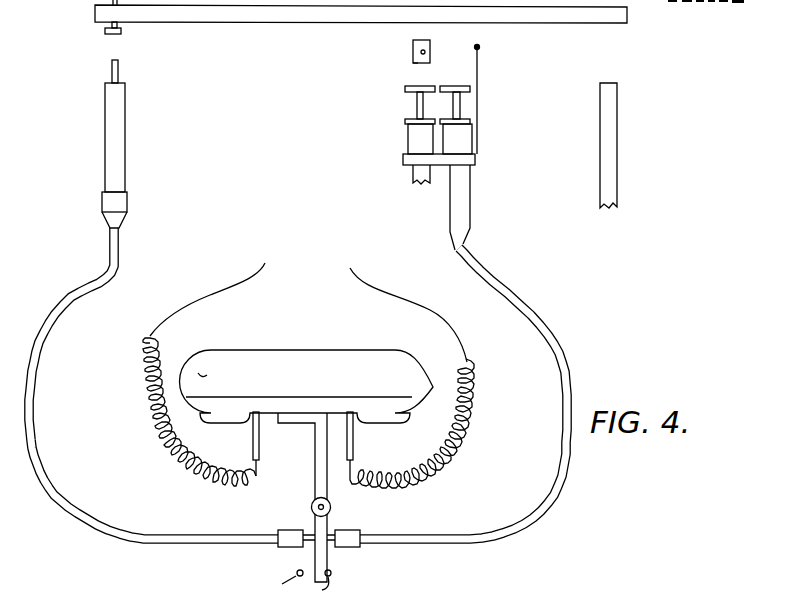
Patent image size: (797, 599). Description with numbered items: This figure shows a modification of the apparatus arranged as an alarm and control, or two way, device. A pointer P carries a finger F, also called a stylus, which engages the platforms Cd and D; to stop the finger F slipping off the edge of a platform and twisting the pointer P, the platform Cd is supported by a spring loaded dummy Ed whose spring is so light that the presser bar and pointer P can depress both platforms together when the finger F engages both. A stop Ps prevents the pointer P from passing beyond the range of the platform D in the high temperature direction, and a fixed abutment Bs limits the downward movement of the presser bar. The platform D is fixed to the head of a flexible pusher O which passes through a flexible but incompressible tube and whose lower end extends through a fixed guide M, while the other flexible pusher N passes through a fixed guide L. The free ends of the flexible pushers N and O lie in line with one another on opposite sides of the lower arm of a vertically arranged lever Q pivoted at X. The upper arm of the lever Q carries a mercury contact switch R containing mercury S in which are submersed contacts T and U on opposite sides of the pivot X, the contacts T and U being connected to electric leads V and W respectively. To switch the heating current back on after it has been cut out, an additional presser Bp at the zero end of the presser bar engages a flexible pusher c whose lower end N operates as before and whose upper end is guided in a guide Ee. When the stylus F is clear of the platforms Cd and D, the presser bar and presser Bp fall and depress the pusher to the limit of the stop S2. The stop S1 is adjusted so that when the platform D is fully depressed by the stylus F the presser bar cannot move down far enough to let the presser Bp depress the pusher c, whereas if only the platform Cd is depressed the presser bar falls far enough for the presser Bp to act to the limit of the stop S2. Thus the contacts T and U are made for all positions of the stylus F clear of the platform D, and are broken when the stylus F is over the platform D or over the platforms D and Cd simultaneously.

The additional presser Bp is at (105, 31).
The flexible pusher c is at (119, 68).
The guide Ee is at (124, 161).
The pointer P is at (413, 50).
The finger F is at (413, 63).
The platform D is at (449, 86).
The stop Ps is at (480, 86).
The platform Cd is at (408, 135).
The gauge cylinder G is at (465, 141).
The spring loaded dummy Ed is at (413, 173).
The fixed abutment Bs is at (613, 167).
The electric lead V is at (204, 374).
The electric lead W is at (412, 378).
The mercury S is at (290, 397).
The mercury contact switch R is at (318, 363).
The contact T is at (253, 450).
The contact U is at (355, 450).
The lever Q is at (316, 462).
The pivot X is at (330, 508).
The flexible pusher N is at (311, 530).
The fixed guide L is at (292, 540).
The fixed guide M is at (353, 540).
The flexible pusher O is at (330, 545).
The stop S1 is at (280, 584).
The stop S2 is at (314, 584).